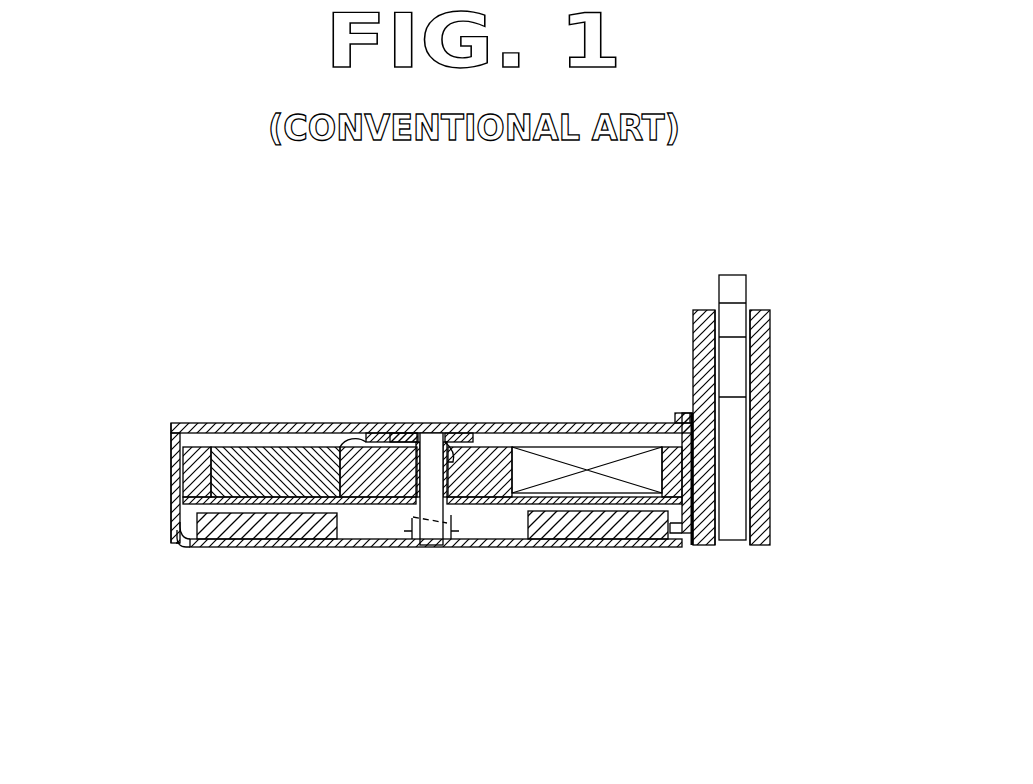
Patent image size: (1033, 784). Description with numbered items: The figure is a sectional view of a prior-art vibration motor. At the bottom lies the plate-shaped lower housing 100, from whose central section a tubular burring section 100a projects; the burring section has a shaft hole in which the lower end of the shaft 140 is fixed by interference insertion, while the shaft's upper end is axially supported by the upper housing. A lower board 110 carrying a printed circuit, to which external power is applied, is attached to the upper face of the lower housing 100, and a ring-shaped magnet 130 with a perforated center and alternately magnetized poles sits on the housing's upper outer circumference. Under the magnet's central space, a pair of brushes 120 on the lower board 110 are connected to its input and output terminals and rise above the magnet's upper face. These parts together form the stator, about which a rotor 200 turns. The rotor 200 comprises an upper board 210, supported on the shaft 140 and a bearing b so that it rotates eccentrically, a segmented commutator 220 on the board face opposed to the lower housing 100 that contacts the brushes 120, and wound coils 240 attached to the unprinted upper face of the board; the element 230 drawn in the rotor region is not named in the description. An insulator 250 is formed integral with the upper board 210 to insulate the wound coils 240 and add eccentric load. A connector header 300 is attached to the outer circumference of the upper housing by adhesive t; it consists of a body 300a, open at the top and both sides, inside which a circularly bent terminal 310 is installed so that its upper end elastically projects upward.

The lower housing 100 is at (200, 548).
The tubular burring section 100a is at (414, 525).
The lower board 110 is at (348, 544).
The brushes 120 is at (393, 508).
The magnet 130 is at (525, 539).
The shaft 140 is at (401, 440).
The rotor 200 is at (208, 434).
The upper board 210 is at (190, 512).
The commutator 220 is at (477, 506).
The magnet 230 is at (278, 452).
The wound coils 240 is at (584, 452).
The insulator 250 is at (353, 446).
The connector header 300 is at (786, 562).
The body 300a is at (772, 428).
The terminal 310 is at (733, 273).
The bearing b is at (462, 445).
The adhesive t is at (690, 408).